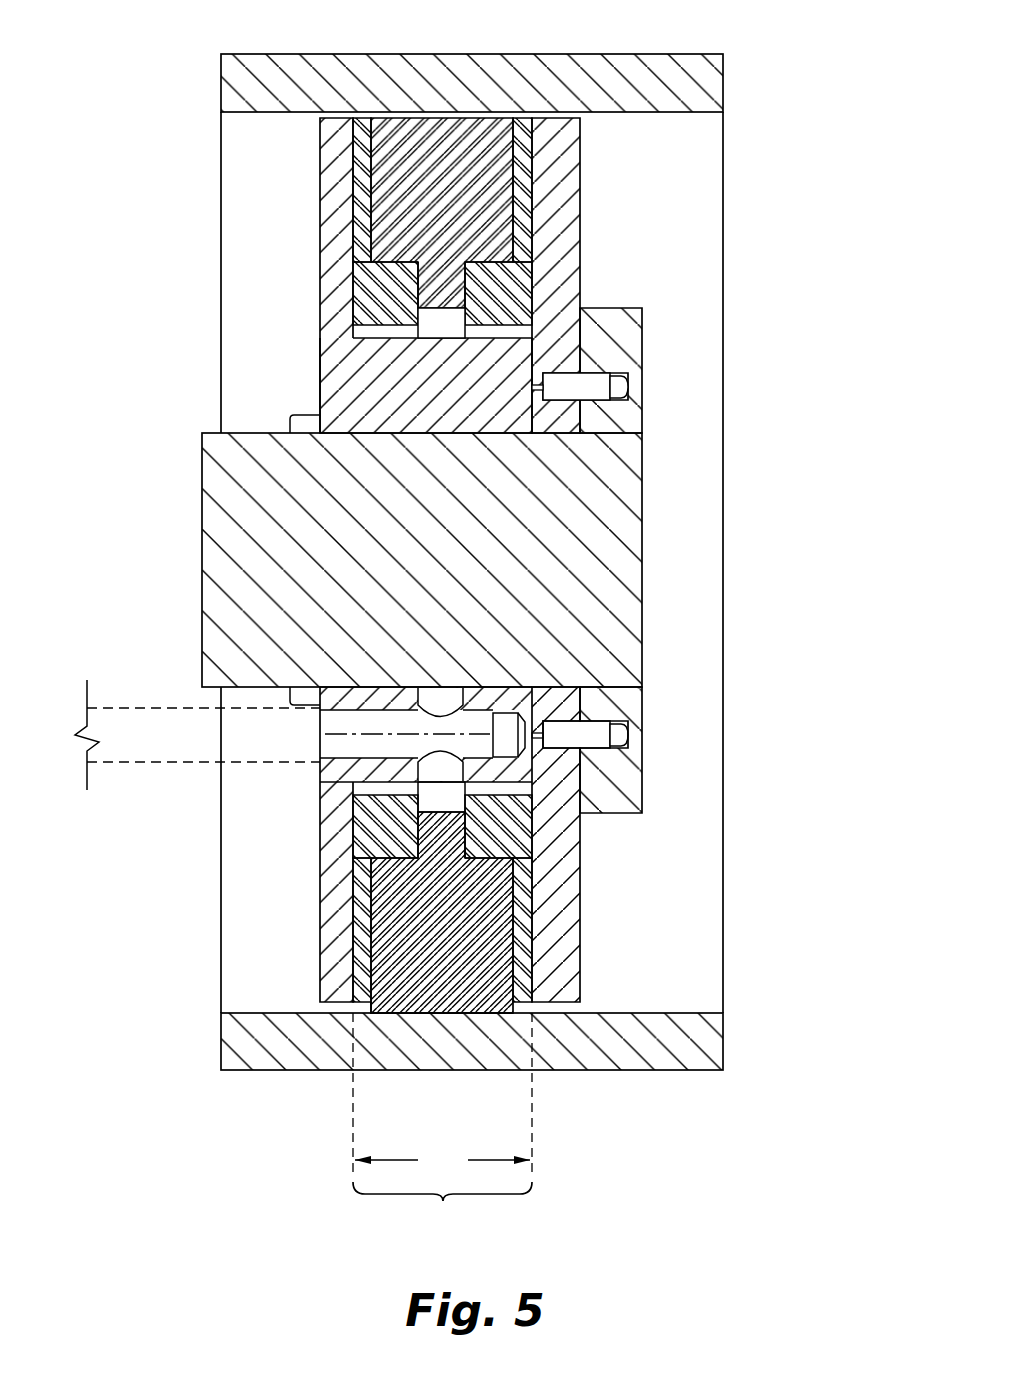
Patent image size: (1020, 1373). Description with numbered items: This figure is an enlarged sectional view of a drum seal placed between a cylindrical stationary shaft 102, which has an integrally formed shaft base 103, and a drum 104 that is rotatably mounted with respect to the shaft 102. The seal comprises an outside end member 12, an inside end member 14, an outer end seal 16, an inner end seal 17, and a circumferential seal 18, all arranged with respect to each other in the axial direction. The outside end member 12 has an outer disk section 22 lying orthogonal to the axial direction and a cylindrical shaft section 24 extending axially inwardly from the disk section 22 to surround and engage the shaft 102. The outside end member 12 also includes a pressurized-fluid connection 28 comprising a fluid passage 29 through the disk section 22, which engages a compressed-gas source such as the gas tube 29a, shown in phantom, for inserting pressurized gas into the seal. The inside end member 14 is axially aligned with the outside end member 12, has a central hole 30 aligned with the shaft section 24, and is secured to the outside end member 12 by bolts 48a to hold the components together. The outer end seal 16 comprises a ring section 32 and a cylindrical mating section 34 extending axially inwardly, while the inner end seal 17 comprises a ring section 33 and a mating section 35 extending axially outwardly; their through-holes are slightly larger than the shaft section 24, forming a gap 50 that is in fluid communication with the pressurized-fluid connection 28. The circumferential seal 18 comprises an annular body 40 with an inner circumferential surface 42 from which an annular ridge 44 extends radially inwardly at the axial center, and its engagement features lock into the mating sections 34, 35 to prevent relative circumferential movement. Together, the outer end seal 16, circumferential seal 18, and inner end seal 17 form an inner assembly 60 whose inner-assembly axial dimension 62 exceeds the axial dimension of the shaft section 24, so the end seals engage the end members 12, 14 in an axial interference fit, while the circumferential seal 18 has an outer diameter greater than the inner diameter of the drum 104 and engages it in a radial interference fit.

The outside end member 12 is at (337, 883).
The inside end member 14 is at (553, 918).
The outer end seal 16 is at (363, 923).
The inner end seal 17 is at (500, 1013).
The circumferential seal 18 is at (395, 1004).
The outer disk section 22 is at (320, 190).
The shaft section 24 is at (410, 410).
The pressurized-fluid connection 28 is at (353, 747).
The fluid passage 29 is at (345, 714).
The gas tube 29a is at (150, 707).
The central hole 30 is at (557, 684).
The ring section 32 is at (355, 148).
The ring section 33 is at (523, 200).
The mating section 34 is at (372, 312).
The mating section 35 is at (530, 270).
The annular body 40 is at (410, 138).
The inner circumferential surface 42 is at (378, 272).
The annular ridge 44 is at (442, 290).
The bolts 48a is at (588, 386).
The gap 50 is at (440, 332).
The inner assembly 60 is at (442, 1209).
The inner-assembly axial dimension 62 is at (442, 1095).
The shaft 102 is at (220, 537).
The shaft base 103 is at (625, 332).
The drum 104 is at (698, 1035).